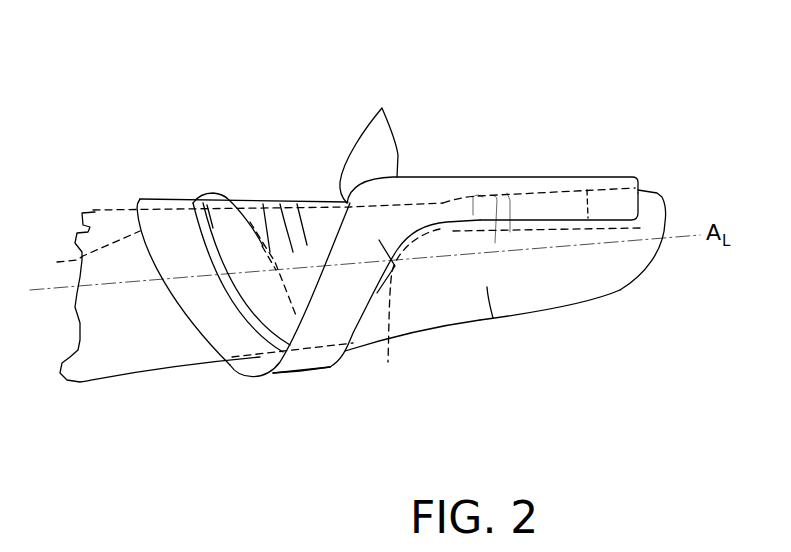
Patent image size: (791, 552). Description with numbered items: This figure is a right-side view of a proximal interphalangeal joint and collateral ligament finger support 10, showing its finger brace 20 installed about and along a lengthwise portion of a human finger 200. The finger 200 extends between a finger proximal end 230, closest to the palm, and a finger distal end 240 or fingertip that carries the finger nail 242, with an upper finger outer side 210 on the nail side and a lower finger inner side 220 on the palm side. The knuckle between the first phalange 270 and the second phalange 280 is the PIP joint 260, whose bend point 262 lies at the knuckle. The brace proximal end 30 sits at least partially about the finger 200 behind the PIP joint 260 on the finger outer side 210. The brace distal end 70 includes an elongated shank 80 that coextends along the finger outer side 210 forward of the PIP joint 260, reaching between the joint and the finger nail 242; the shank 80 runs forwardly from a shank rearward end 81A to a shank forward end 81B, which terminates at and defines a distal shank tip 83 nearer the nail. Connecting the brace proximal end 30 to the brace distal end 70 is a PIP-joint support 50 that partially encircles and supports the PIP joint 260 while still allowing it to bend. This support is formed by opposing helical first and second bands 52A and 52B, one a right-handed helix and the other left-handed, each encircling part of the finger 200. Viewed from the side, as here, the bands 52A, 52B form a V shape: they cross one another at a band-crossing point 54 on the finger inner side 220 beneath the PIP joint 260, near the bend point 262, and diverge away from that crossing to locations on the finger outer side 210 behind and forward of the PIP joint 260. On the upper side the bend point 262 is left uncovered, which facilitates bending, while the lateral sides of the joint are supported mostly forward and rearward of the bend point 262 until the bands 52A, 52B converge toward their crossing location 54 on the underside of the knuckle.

The finger support 10 is at (370, 141).
The finger brace 20 is at (477, 177).
The brace proximal end 30 is at (147, 197).
The PIP-joint support 50 is at (230, 308).
The helical first band 52A is at (223, 200).
The helical second band 52B is at (223, 331).
The band-crossing point 54 is at (297, 380).
The brace distal end 70 is at (413, 177).
The elongated shank 80 is at (540, 177).
The shank rearward end 81A is at (403, 177).
The shank forward end 81B is at (610, 177).
The distal shank tip 83 is at (638, 175).
The human finger 200 is at (520, 287).
The finger outer side 210 is at (447, 207).
The finger inner side 220 is at (455, 328).
The finger proximal end 230 is at (101, 360).
The finger distal end 240 is at (643, 277).
The finger nail 242 is at (650, 200).
The PIP joint 260 is at (280, 203).
The bend point 262 is at (295, 200).
The first phalange 270 is at (107, 230).
The second phalange 280 is at (406, 258).